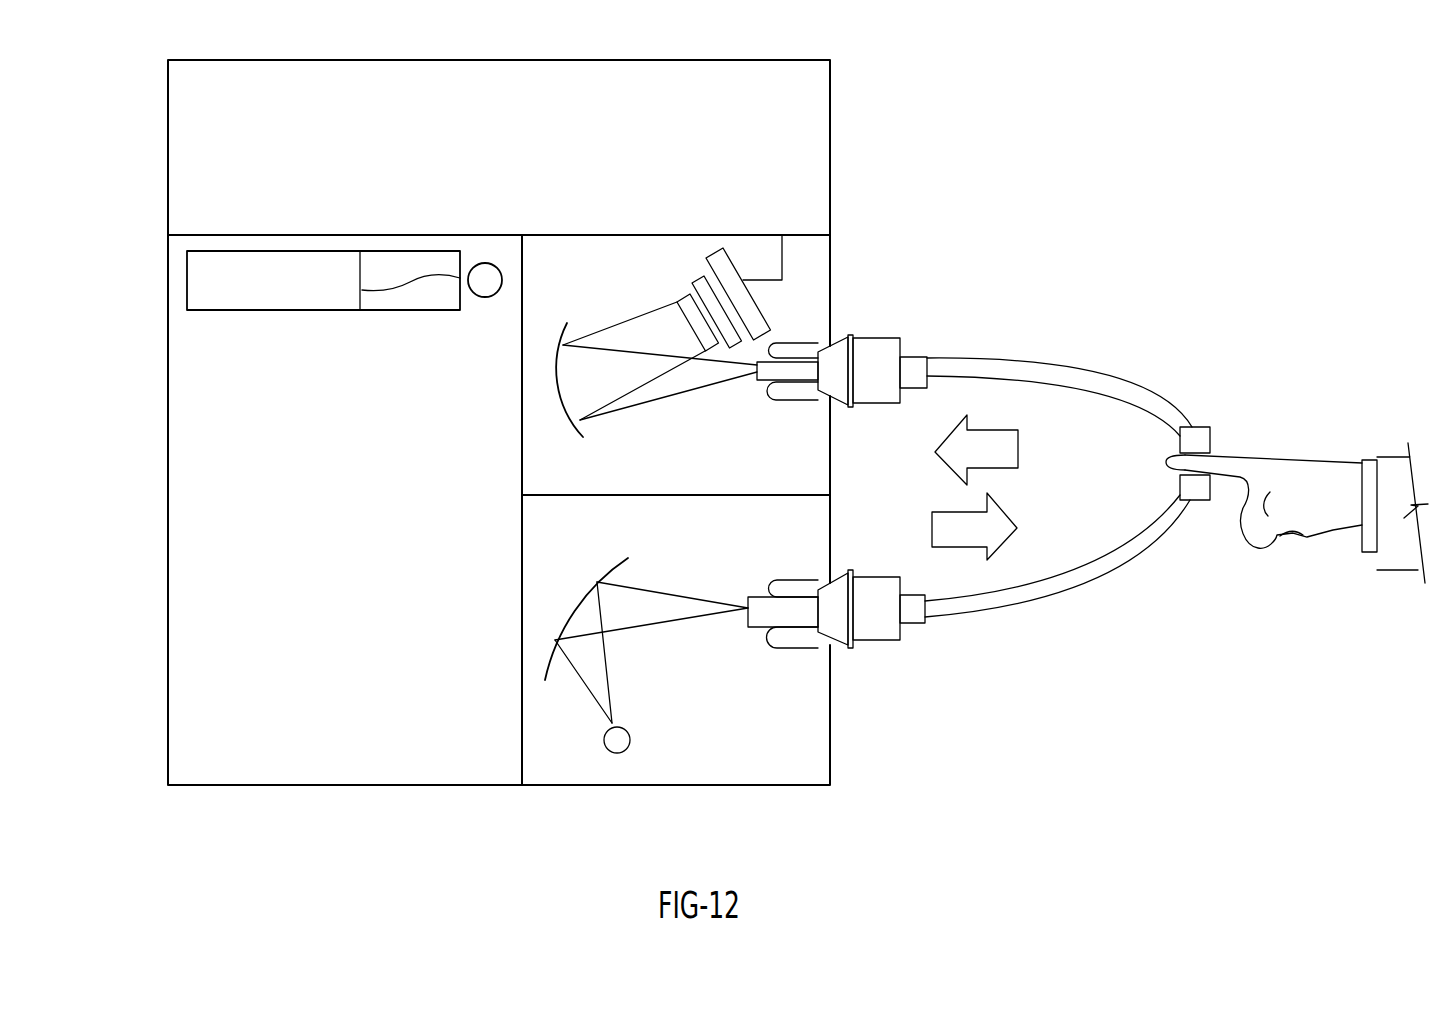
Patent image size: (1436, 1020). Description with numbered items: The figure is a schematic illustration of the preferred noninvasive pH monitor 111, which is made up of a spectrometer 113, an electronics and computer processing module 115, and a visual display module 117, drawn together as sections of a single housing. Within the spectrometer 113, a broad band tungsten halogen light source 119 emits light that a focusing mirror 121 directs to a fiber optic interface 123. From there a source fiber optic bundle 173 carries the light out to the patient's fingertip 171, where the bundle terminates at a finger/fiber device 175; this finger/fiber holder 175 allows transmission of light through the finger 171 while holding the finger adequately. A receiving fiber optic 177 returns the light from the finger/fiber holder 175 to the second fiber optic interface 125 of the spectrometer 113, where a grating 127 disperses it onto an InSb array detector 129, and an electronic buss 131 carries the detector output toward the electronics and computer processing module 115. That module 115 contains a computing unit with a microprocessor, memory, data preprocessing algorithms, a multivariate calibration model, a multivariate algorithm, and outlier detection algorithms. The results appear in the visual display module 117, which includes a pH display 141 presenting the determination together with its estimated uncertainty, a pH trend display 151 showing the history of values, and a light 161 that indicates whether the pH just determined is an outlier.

The noninvasive pH monitor 111 is at (992, 197).
The spectrometer 113 is at (830, 735).
The electronics and computer processing module 115 is at (830, 140).
The visual display module 117 is at (320, 785).
The broad band tungsten halogen light source 119 is at (630, 738).
The focusing mirror 121 is at (626, 559).
The fiber optic interface 123 is at (890, 640).
The second fiber optic interface 125 is at (905, 338).
The grating 127 is at (583, 432).
The InSb array detector 129 is at (765, 318).
The electronic buss 131 is at (782, 263).
The pH display 141 is at (227, 297).
The pH trend display 151 is at (430, 262).
The light 161 is at (485, 280).
The fingertip 171 is at (1203, 463).
The source fiber optic bundle 173 is at (1045, 588).
The finger/fiber device 175 is at (1200, 435).
The receiving fiber optic 177 is at (1082, 347).